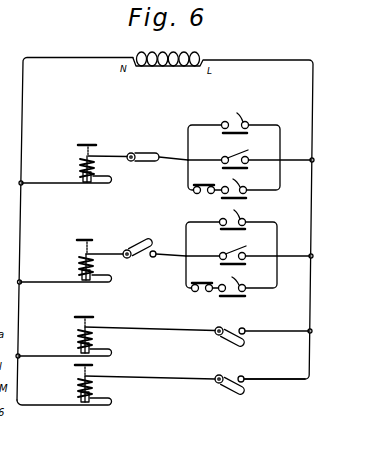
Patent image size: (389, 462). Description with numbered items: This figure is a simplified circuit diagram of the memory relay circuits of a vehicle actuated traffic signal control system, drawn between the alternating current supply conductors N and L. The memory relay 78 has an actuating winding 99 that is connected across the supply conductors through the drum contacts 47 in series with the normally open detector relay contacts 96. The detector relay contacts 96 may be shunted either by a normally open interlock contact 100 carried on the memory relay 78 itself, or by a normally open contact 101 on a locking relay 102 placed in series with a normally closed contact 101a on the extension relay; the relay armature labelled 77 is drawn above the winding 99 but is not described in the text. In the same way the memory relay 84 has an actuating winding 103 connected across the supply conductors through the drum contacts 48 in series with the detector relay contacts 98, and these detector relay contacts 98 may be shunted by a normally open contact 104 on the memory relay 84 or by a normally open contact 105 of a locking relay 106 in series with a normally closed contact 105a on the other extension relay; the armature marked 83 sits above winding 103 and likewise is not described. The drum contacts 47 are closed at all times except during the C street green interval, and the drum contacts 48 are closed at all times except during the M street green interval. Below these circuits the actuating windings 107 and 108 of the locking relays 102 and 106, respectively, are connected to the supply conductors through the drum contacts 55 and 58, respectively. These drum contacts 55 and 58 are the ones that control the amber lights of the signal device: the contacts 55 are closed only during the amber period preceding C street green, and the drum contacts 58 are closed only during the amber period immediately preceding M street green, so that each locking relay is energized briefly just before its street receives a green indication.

The contact 77 is at (100, 144).
The drum contacts 47 is at (148, 155).
The actuating winding 99 is at (96, 168).
The memory relay 78 is at (80, 177).
The interlock contact 100 is at (249, 114).
The detector relay contacts 96 is at (248, 150).
The normally closed contact 101a is at (201, 184).
The normally open contact 101 is at (246, 186).
The contact 83 is at (94, 242).
The drum contacts 48 is at (137, 241).
The actuating winding 103 is at (78, 258).
The memory relay 84 is at (80, 274).
The normally open contact 104 is at (242, 216).
The detector relay contacts 98 is at (246, 246).
The normally closed contact 105a is at (201, 282).
The normally open contact 105 is at (245, 284).
The actuating winding 107 is at (78, 333).
The locking relay 102 is at (80, 348).
The drum contacts 55 is at (225, 340).
The actuating winding 108 is at (78, 381).
The locking relay 106 is at (80, 396).
The drum contacts 58 is at (226, 391).